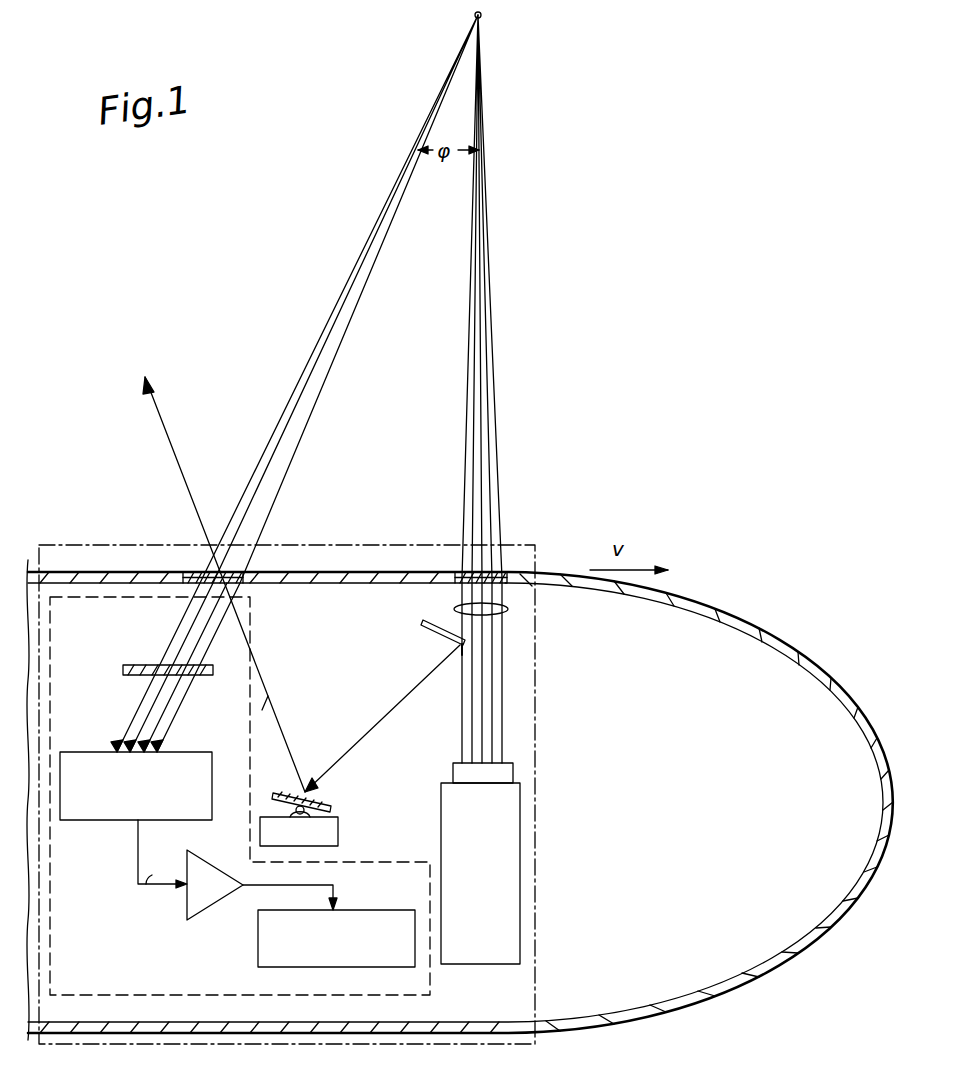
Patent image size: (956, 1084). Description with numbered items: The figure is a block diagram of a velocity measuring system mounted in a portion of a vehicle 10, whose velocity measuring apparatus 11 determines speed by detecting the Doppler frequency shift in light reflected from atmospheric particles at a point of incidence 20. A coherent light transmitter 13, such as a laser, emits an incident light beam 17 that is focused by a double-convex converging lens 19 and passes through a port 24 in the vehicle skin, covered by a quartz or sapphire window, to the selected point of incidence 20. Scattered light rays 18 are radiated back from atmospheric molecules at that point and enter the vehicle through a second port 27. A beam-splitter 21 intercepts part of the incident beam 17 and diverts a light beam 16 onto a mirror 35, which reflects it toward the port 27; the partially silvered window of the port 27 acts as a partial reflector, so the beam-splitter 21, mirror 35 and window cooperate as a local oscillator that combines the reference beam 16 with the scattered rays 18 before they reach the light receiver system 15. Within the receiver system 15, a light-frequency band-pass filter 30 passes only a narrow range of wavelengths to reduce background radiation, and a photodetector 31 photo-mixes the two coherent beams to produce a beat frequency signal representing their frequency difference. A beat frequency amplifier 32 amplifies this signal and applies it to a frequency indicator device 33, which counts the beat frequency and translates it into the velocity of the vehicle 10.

The vehicle 10 is at (735, 612).
The velocity measuring apparatus 11 is at (540, 787).
The coherent light transmitter 13 is at (441, 812).
The light receiver system 15 is at (268, 712).
The light beam 16 is at (168, 434).
The incident light beam 17 is at (498, 282).
The scattered light rays 18 is at (304, 370).
The converging lens 19 is at (505, 612).
The point of incidence 20 is at (482, 17).
The beam-splitter 21 is at (424, 622).
The port 24 is at (484, 585).
The second port 27 is at (196, 571).
The light-frequency band-pass filter 30 is at (198, 676).
The photodetector 31 is at (110, 822).
The beat frequency amplifier 32 is at (195, 920).
The frequency indicator device 33 is at (372, 908).
The mirror 35 is at (330, 800).